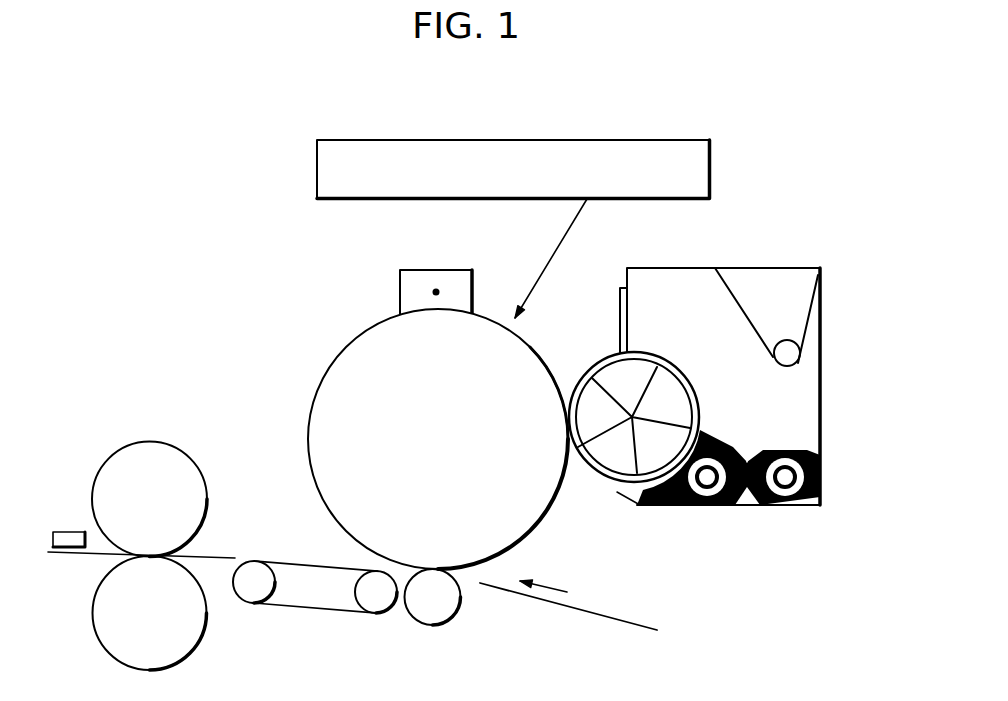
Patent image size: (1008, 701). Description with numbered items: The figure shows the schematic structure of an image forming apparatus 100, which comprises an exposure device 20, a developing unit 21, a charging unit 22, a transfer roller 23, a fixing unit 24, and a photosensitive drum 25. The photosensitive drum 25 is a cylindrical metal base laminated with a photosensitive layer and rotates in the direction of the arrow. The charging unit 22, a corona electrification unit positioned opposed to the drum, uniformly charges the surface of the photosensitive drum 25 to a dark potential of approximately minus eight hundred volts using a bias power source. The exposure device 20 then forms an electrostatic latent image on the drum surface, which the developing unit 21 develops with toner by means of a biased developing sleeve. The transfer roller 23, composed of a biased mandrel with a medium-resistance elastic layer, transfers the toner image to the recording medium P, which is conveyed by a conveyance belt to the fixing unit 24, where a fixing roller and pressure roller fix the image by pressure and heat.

The image forming apparatus 100 is at (800, 142).
The exposure device 20 is at (665, 140).
The developing unit 21 is at (784, 268).
The charging unit 22 is at (400, 276).
The transfer roller 23 is at (431, 626).
The fixing unit 24 is at (143, 430).
The photosensitive drum 25 is at (320, 383).